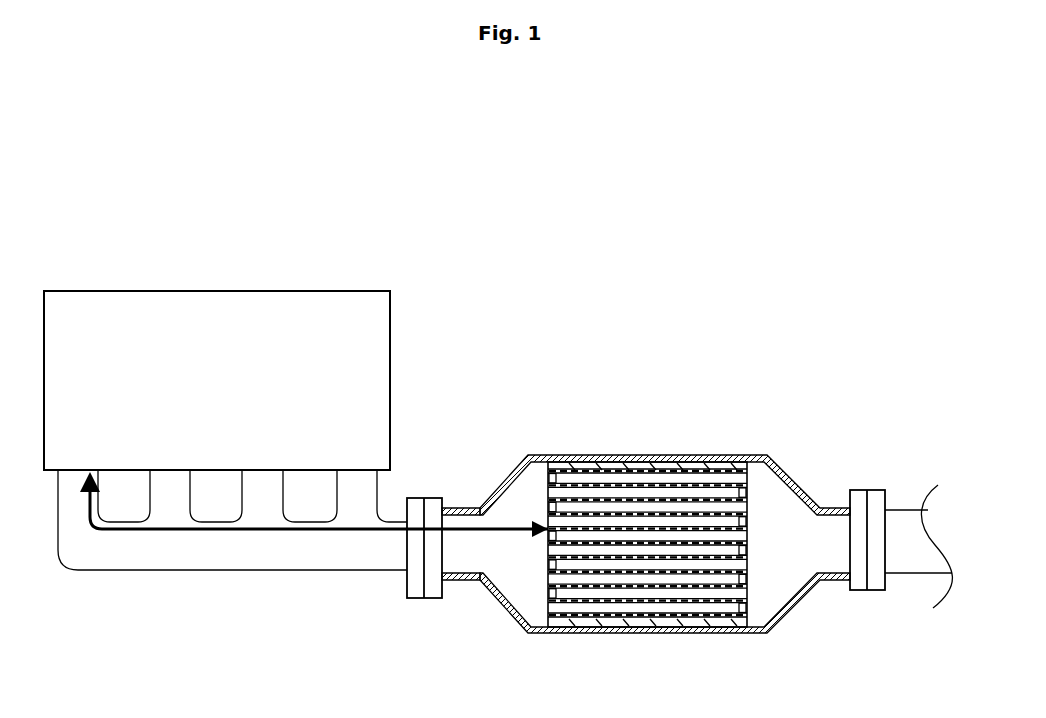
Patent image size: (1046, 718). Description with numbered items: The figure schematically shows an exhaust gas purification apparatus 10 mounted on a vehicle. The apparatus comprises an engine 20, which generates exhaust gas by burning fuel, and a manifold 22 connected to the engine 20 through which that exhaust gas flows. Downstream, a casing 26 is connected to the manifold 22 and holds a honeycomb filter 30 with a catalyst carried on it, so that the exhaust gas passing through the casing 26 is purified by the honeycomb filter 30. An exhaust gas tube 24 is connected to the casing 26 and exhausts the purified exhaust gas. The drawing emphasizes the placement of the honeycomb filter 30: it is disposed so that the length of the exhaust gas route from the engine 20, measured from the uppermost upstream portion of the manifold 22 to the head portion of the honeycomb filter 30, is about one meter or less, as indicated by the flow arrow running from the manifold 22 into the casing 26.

The exhaust gas purification apparatus 10 is at (522, 231).
The engine 20 is at (390, 381).
The manifold 22 is at (290, 571).
The exhaust gas tube 24 is at (897, 507).
The casing 26 is at (665, 455).
The honeycomb filter 30 is at (544, 468).